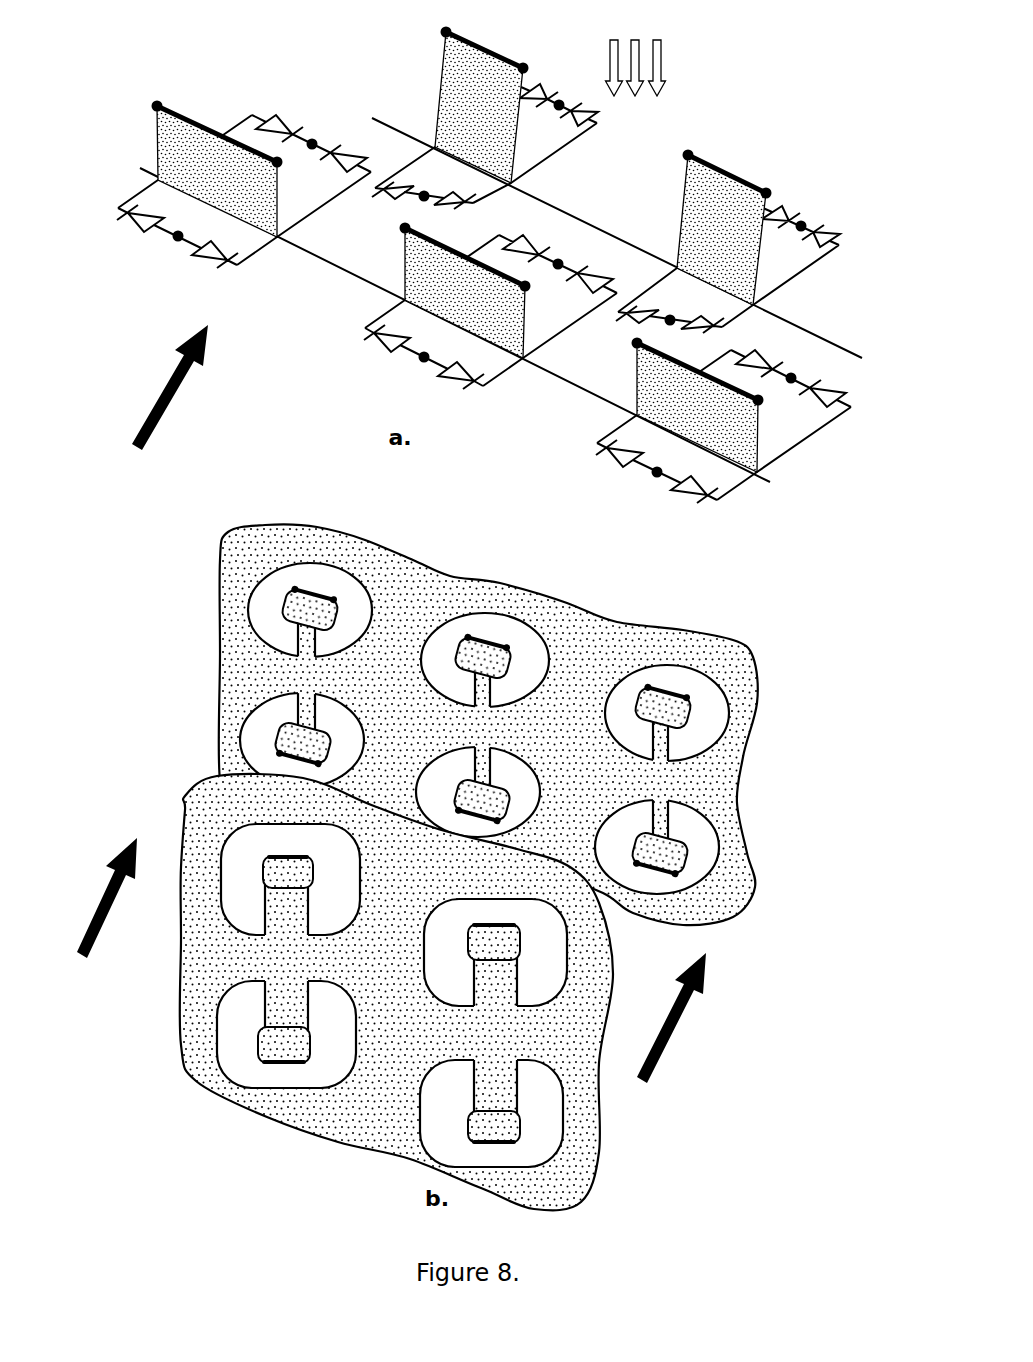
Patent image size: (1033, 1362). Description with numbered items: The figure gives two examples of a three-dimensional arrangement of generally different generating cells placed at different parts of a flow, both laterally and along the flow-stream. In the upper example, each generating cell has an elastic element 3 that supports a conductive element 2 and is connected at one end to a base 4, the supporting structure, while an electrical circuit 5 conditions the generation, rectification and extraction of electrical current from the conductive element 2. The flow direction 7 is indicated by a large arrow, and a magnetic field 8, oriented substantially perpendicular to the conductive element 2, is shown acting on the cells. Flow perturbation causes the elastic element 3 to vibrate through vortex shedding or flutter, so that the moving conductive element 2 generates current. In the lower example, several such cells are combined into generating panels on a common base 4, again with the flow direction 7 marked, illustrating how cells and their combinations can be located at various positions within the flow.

The conductive element 2 is at (278, 1060).
The elastic element 3 is at (281, 1017).
The base 4 is at (557, 1103).
The electrical circuit 5 is at (365, 320).
The flow direction 7 is at (648, 1050).
The magnetic field 8 is at (663, 63).